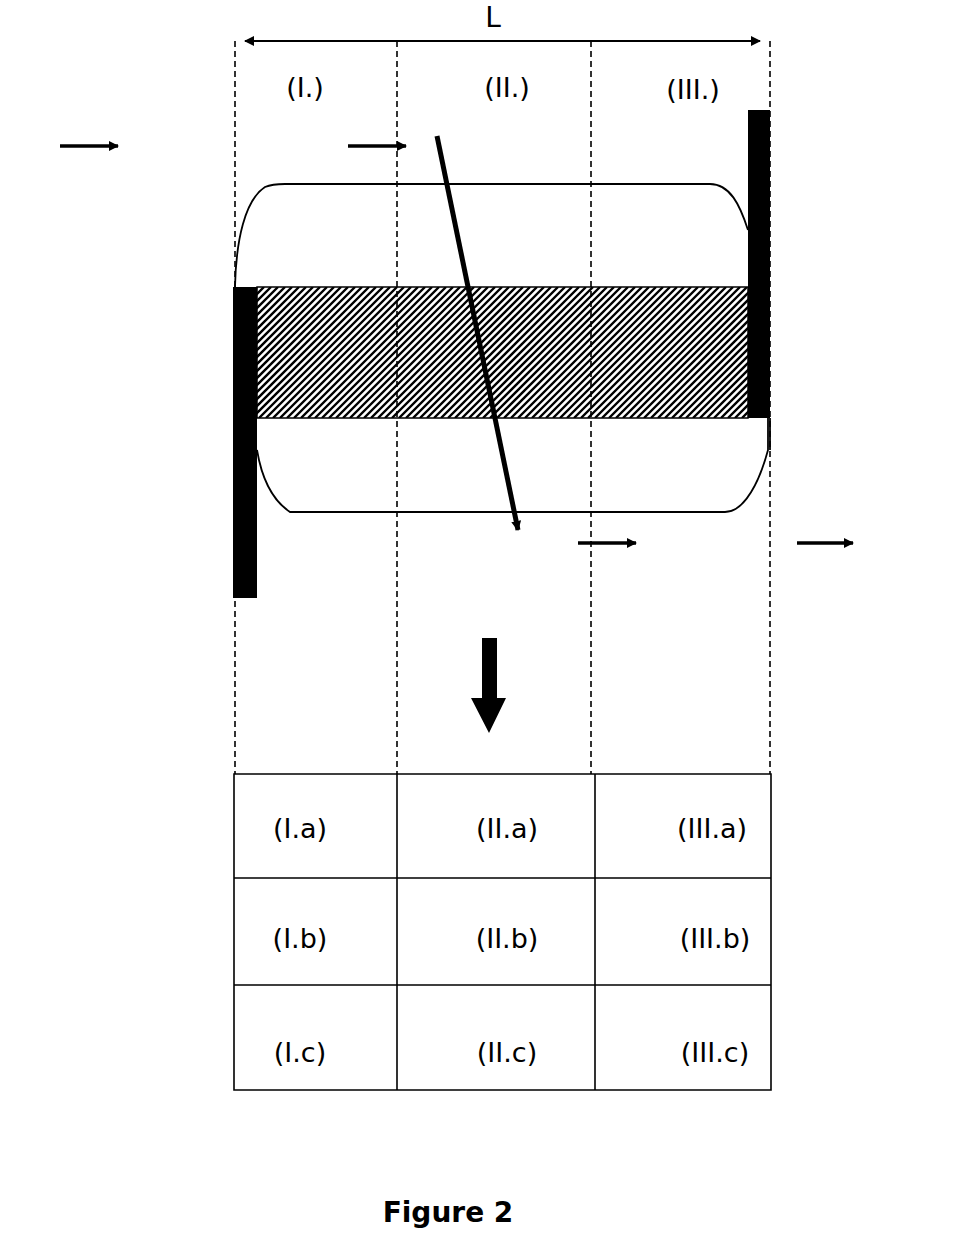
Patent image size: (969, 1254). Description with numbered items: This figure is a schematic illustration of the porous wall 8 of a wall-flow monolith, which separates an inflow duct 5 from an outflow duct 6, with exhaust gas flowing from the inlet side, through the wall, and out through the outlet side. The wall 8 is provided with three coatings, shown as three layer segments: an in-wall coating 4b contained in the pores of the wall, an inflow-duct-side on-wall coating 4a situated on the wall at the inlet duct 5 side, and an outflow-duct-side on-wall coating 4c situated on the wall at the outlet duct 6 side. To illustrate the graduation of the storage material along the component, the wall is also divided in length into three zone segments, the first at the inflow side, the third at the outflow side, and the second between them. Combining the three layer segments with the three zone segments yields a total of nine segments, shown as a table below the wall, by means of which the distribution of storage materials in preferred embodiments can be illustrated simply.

The inlet duct 5 is at (266, 217).
The inflow-duct-side on-wall coating 4a is at (651, 257).
The in-wall coating 4b is at (245, 442).
The porous wall 8 is at (290, 350).
The outflow-duct-side on-wall coating 4c is at (657, 459).
The outlet duct 6 is at (735, 500).